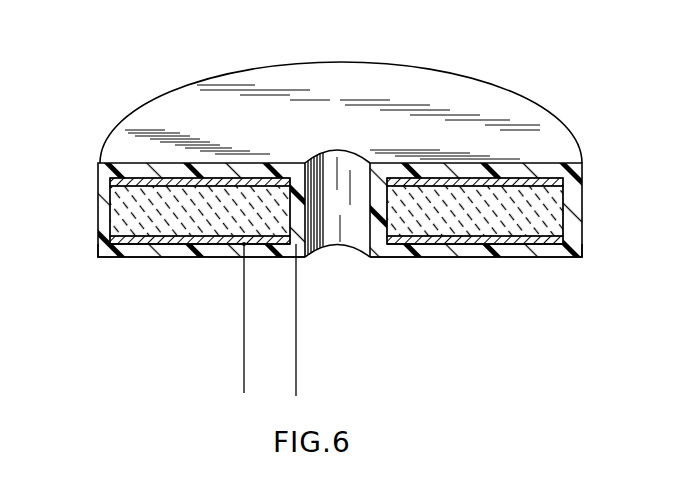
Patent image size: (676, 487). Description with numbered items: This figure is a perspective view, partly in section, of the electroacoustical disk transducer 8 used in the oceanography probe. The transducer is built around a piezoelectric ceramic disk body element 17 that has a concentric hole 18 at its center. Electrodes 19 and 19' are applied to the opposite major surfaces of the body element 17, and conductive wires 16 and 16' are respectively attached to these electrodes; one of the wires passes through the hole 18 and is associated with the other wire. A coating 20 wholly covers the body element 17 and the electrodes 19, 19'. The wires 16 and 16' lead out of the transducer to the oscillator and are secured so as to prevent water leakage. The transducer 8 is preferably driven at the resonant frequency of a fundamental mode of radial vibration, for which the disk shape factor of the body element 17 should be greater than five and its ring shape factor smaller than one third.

The electroacoustical disk transducer 8 is at (322, 68).
The conductive wire 16 is at (216, 317).
The conductive wire 16' is at (321, 320).
The piezoelectric ceramic disk body element 17 is at (465, 224).
The concentric hole 18 is at (341, 151).
The electrode 19 is at (313, 205).
The electrode 19' is at (313, 249).
The coating 20 is at (106, 211).